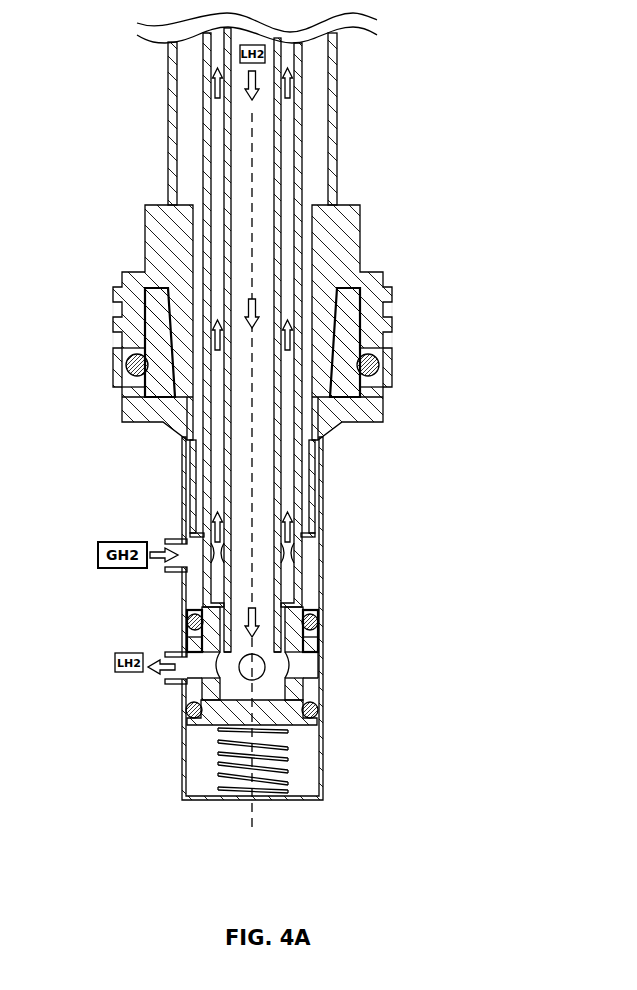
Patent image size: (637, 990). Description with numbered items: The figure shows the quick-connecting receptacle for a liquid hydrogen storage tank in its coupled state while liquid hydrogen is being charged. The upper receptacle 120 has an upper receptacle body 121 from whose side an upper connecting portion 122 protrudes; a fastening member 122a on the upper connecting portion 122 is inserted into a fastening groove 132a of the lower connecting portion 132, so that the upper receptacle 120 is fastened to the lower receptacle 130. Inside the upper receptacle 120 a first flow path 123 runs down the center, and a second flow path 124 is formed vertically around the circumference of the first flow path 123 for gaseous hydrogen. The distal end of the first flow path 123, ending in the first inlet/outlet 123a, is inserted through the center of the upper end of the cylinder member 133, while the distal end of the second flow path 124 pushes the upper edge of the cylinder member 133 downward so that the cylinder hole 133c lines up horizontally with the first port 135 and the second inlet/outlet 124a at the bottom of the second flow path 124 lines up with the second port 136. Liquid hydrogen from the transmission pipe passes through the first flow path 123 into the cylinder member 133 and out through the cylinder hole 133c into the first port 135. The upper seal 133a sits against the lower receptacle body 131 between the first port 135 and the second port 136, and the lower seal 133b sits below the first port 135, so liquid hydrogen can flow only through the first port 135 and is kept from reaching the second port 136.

The upper receptacle 120 is at (140, 103).
The upper receptacle body 121 is at (333, 123).
The upper connecting portion 122 is at (345, 237).
The fastening member 122a is at (368, 348).
The first flow path 123 is at (240, 145).
The first inlet/outlet 123a is at (232, 657).
The second flow path 124 is at (218, 242).
The second inlet/outlet 124a is at (187, 560).
The lower receptacle 130 is at (142, 447).
The lower receptacle body 131 is at (323, 513).
The lower connecting portion 132 is at (372, 412).
The fastening groove 132a is at (380, 375).
The cylinder member 133 is at (320, 637).
The upper seal 133a is at (318, 618).
The lower seal 133b is at (320, 708).
The cylinder hole 133c is at (193, 667).
The first port 135 is at (177, 652).
The second port 136 is at (175, 540).